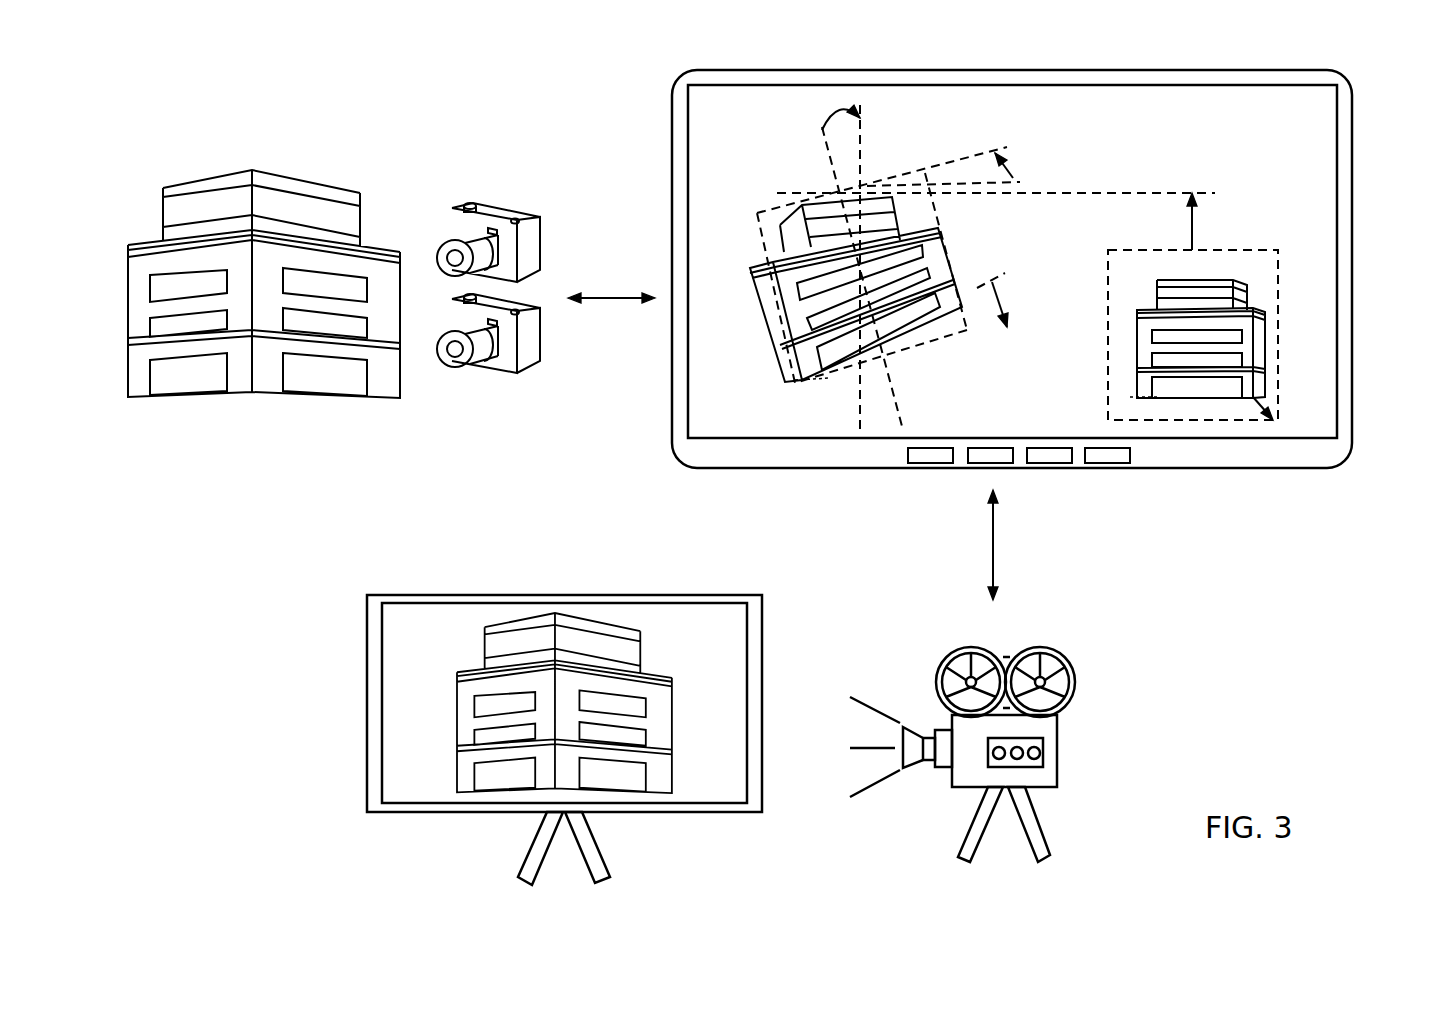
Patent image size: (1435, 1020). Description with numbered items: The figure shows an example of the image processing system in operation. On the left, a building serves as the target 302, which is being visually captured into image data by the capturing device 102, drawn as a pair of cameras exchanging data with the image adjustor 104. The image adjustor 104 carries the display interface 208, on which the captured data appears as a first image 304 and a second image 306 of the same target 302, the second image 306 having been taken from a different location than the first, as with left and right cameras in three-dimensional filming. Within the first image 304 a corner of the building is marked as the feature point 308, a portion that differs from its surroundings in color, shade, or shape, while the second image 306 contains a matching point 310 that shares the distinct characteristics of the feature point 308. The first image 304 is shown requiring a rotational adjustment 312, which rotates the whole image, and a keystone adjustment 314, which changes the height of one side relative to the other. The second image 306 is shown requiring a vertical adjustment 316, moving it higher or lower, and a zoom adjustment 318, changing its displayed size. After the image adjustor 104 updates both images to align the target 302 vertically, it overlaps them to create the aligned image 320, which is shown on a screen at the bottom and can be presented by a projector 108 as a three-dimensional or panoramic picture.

The capturing device 102 is at (496, 170).
The image adjustor 104 is at (1317, 80).
The projector 108 is at (1075, 652).
The display interface 208 is at (1315, 135).
The target 302 is at (250, 150).
The first image 304 is at (758, 322).
The second image 306 is at (1272, 353).
The feature point 308 is at (823, 385).
The matching point 310 is at (1153, 398).
The rotational adjustment 312 is at (840, 100).
The keystone adjustment 314 is at (1023, 187).
The vertical adjustment 316 is at (1208, 213).
The zoom adjustment 318 is at (1272, 400).
The aligned image 320 is at (542, 600).